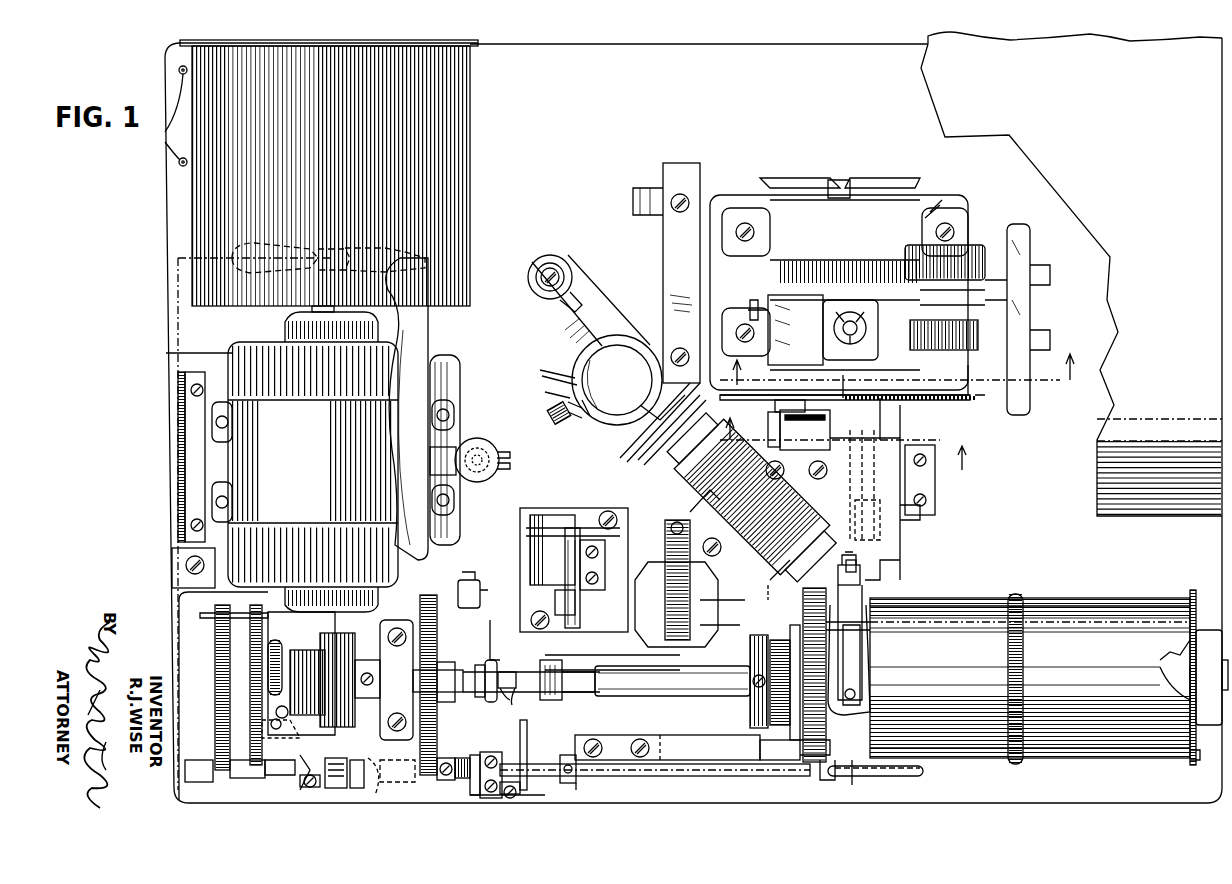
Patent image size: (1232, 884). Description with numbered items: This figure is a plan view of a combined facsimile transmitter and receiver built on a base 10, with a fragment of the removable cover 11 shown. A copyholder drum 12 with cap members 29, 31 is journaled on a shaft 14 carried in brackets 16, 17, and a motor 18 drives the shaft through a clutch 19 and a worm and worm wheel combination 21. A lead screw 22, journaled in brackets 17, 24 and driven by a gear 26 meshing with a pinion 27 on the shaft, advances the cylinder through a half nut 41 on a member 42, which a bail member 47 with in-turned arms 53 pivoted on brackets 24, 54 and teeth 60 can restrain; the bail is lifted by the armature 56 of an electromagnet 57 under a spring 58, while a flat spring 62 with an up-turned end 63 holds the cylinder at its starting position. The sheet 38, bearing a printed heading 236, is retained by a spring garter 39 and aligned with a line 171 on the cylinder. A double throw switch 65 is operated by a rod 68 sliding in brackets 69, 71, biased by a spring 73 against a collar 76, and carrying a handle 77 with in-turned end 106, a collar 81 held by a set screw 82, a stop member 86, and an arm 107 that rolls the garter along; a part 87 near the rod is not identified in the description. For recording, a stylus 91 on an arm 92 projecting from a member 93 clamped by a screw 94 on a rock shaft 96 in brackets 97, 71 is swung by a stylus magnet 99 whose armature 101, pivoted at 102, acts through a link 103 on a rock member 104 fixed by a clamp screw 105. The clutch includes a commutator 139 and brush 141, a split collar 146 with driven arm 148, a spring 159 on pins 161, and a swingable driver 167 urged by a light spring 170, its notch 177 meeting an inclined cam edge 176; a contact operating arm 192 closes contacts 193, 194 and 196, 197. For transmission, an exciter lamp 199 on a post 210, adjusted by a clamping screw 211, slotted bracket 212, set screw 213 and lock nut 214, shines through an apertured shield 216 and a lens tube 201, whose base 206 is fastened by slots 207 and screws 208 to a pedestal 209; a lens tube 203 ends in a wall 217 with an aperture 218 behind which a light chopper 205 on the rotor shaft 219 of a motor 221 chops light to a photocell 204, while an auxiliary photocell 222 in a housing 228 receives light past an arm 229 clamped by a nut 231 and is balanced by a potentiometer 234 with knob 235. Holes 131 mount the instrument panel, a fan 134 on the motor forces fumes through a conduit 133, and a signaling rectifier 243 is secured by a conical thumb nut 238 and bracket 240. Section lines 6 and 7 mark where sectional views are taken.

The base 10 is at (176, 238).
The removable cover 11 is at (1112, 238).
The drum 12 is at (1140, 600).
The shaft 14 is at (640, 690).
The bracket 16 is at (1218, 640).
The bracket 17 is at (398, 628).
The motor 18 is at (252, 345).
The clutch 19 is at (275, 592).
The worm and worm wheel combination 21 is at (348, 640).
The lead screw 22 is at (492, 695).
The bracket 24 is at (840, 578).
The gear 26 is at (438, 635).
The pinion 27 is at (438, 670).
The cap member 29 is at (1194, 755).
The cap member 31 is at (795, 612).
The sheet 38 is at (1078, 600).
The spring garter 39 is at (1016, 596).
The half nut member 41 is at (770, 765).
The member 42 is at (808, 610).
The bail member 47 is at (510, 668).
The in-turned arms 53 is at (648, 603).
The bracket 54 is at (470, 579).
The armature 56 is at (710, 624).
The electromagnet 57 is at (710, 602).
The spring 58 is at (668, 531).
The teeth 60 is at (665, 655).
The flat spring 62 is at (685, 738).
The up-turned end 63 is at (800, 760).
The double throw switch 65 is at (468, 790).
The switch operating rod 68 is at (672, 778).
The bracket 69 is at (490, 798).
The bracket 71 is at (835, 780).
The spring 73 is at (474, 760).
The adjustable collar 76 is at (450, 756).
The handle 77 is at (923, 771).
The collar 81 is at (576, 783).
The set screw 82 is at (560, 756).
The stop member 86 is at (526, 726).
The bracket 87 is at (520, 792).
The stylus 91 is at (860, 568).
The stylus carrying arm 92 is at (865, 590).
The member 93 is at (858, 652).
The clamp screw 94 is at (852, 665).
The rock shaft 96 is at (512, 690).
The bracket 97 is at (470, 708).
The stylus operating magnet 99 is at (540, 570).
The armature 101 is at (572, 630).
The pivot 102 is at (605, 600).
The link 103 is at (560, 640).
The rock member 104 is at (556, 700).
The clamp screw 105 is at (590, 693).
The in-turned end 106 is at (905, 780).
The arm 107 is at (855, 785).
The holes 131 is at (158, 146).
The conduit member 133 is at (470, 142).
The fan 134 is at (256, 250).
The commutator 139 is at (214, 635).
The contact brush 141 is at (222, 595).
The split collar 146 is at (250, 612).
The radially extending arm 148 is at (218, 724).
The spring 159 is at (272, 650).
The pins 161 is at (300, 688).
The swingable driver 167 is at (298, 770).
The light spring 170 is at (292, 745).
The line 171 is at (1172, 665).
The inclined edge 176 is at (270, 780).
The notch 177 is at (283, 760).
The contact operating arm 192 is at (357, 790).
The framing magnet locking contact 193 is at (380, 800).
The framing magnet locking contact 194 is at (395, 785).
The contact 196 is at (310, 790).
The contact 197 is at (336, 790).
The exciter lamp 199 is at (636, 350).
The lens tube 201 is at (680, 478).
The lens tube 203 is at (860, 550).
The photocell 204 is at (866, 330).
The light chopper 205 is at (958, 400).
The base 206 is at (880, 412).
The open ended slots 207 is at (790, 510).
The screws 208 is at (760, 520).
The pedestal 209 is at (690, 515).
The post 210 is at (545, 262).
The clamping screw 211 is at (540, 272).
The slotted bracket 212 is at (545, 333).
The set screw 213 is at (572, 400).
The lock nut 214 is at (590, 420).
The apertured shield 216 is at (668, 290).
The wall 217 is at (895, 436).
The aperture 218 is at (838, 396).
The rotor shaft 219 is at (843, 384).
The light chopper motor 221 is at (906, 208).
The additional photocell 222 is at (815, 332).
The housing 228 is at (770, 425).
The arm 229 is at (775, 406).
The clamping nut 231 is at (805, 430).
The potentiometer 234 is at (1005, 250).
The knob 235 is at (918, 345).
The printed heading 236 is at (916, 628).
The conical thumb nut 238 is at (490, 433).
The bracket 240 is at (450, 475).
The signaling rectifier 243 is at (420, 331).
The section line 6- 6 is at (897, 378).
The section line 7- 7 is at (843, 456).